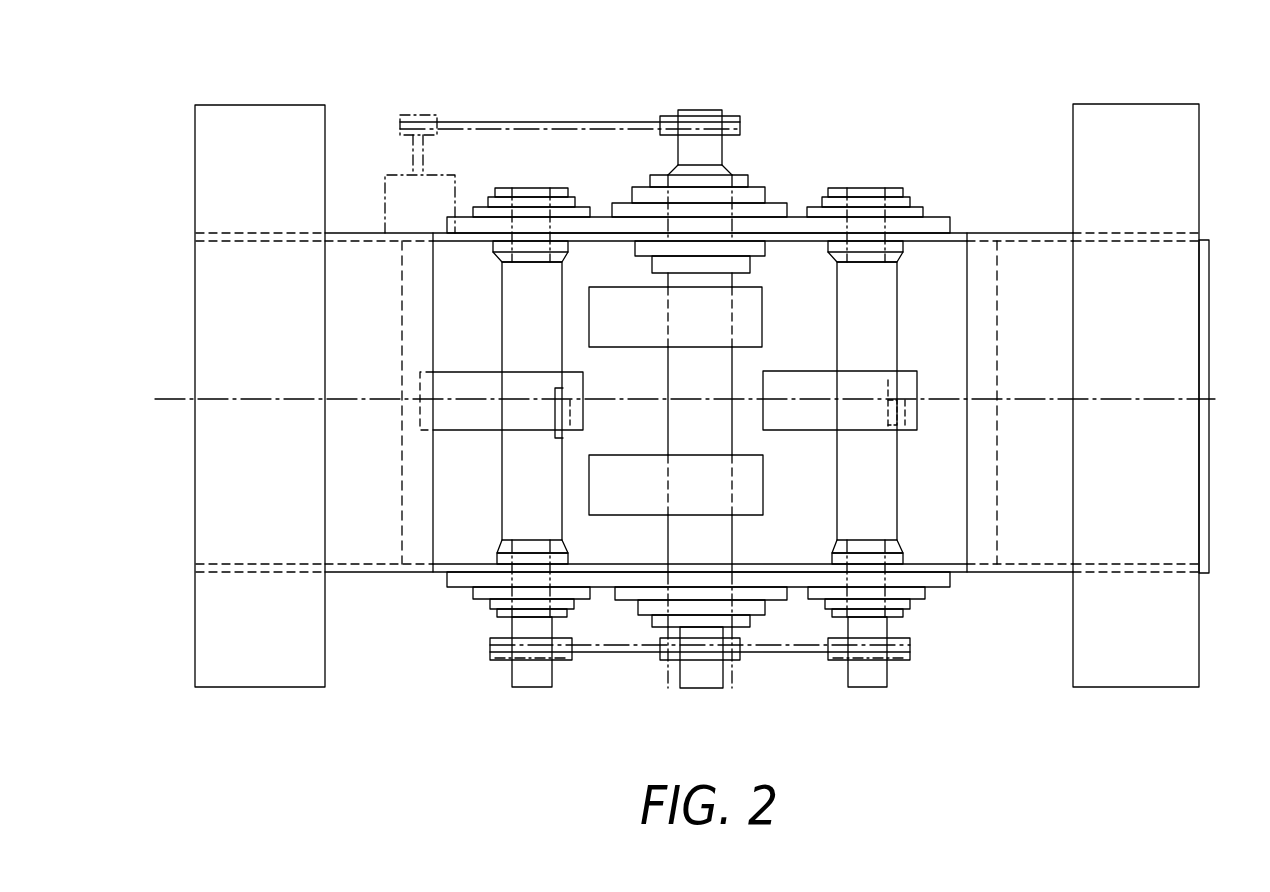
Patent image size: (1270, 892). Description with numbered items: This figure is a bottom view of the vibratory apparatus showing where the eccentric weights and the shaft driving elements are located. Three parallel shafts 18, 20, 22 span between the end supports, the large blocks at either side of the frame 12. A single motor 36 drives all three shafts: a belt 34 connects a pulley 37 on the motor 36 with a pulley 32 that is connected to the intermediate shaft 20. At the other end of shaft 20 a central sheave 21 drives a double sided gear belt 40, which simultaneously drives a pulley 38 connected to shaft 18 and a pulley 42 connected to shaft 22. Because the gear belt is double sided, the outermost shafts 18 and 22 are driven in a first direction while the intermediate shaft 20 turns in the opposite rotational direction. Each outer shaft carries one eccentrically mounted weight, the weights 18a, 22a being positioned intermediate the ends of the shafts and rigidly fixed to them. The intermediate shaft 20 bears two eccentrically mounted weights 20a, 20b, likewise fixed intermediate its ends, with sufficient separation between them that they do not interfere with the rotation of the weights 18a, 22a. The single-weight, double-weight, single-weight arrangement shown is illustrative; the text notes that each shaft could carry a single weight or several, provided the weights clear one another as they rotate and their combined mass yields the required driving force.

The frame upright 12 is at (347, 573).
The shaft 18 is at (893, 515).
The eccentrically mounted weight 18a is at (905, 430).
The intermediate shaft 20 is at (713, 358).
The eccentrically mounted weight 20a is at (763, 485).
The eccentrically mounted weight 20b is at (800, 282).
The central sheave 21 is at (728, 660).
The shaft 22 is at (502, 507).
The eccentrically mounted weight 22a is at (467, 431).
The pulley 32 is at (740, 112).
The belt 34 is at (553, 122).
The motor 36 is at (393, 172).
The pulley 37 is at (427, 110).
The pulley 38 is at (910, 660).
The double sided gear belt 40 is at (795, 660).
The pulley 42 is at (488, 663).